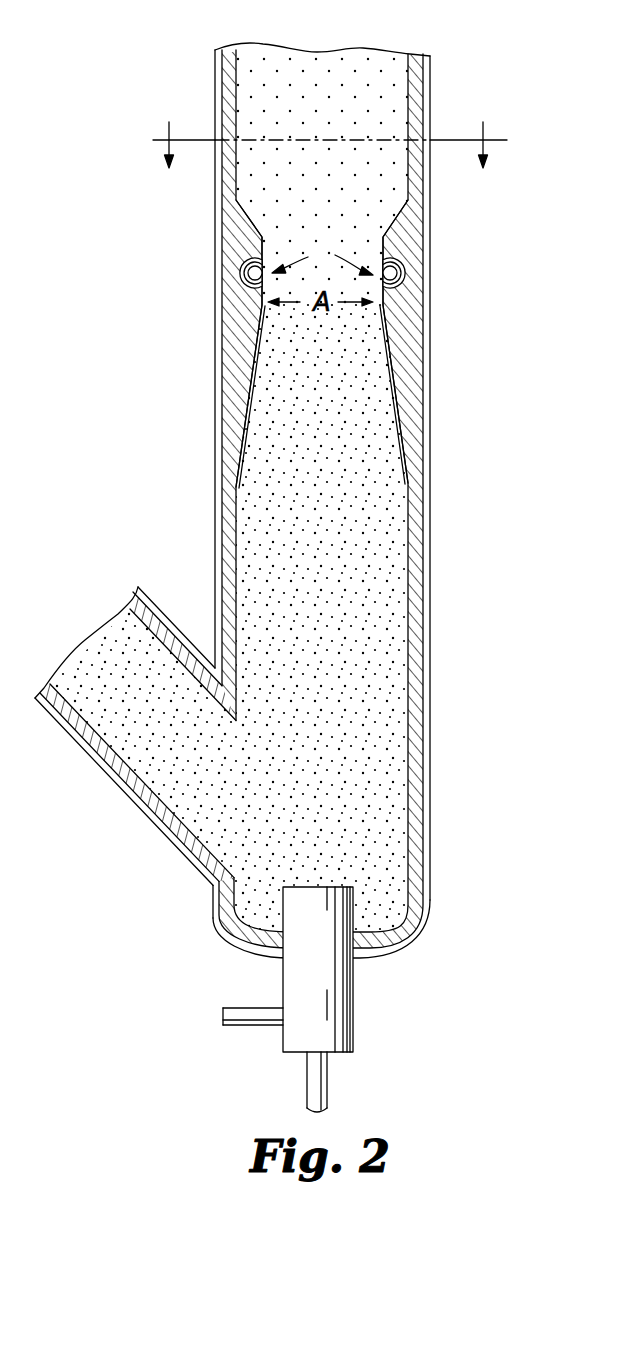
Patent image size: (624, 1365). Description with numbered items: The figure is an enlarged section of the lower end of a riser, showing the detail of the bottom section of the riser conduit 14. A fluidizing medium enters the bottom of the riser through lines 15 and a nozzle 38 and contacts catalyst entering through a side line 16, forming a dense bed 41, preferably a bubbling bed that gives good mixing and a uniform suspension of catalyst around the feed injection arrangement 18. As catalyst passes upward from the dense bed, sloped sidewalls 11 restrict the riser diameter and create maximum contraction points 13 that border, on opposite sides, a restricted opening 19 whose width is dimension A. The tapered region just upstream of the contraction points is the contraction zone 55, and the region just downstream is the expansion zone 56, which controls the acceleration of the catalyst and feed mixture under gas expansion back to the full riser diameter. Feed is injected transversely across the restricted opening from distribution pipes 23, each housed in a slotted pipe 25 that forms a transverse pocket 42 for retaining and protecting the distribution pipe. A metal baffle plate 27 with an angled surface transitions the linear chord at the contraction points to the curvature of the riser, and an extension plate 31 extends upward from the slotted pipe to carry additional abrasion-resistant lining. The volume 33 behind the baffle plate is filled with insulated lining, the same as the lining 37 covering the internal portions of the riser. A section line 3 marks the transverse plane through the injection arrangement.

The section line 3- 3 is at (325, 137).
The sloped sidewalls 11 is at (322, 397).
The contraction points 13 is at (277, 236).
The lower section of riser conduit 14 is at (218, 80).
The lines 15 is at (250, 1007).
The line 16 is at (118, 790).
The feed injection arrangement 18 is at (214, 308).
The restricted opening 19 is at (320, 243).
The distribution pipes 23 is at (246, 274).
The slotted pipes 25 is at (241, 265).
The metal baffle plate 27 is at (258, 390).
The extension plate 31 is at (385, 244).
The volume behind metal baffle 33 is at (233, 333).
The lining 37 is at (412, 70).
The nozzle 38 is at (354, 994).
The dense bed 41 is at (334, 592).
The transverse pocket 42 is at (388, 313).
The contraction zone 55 is at (306, 351).
The expansion zone 56 is at (306, 207).